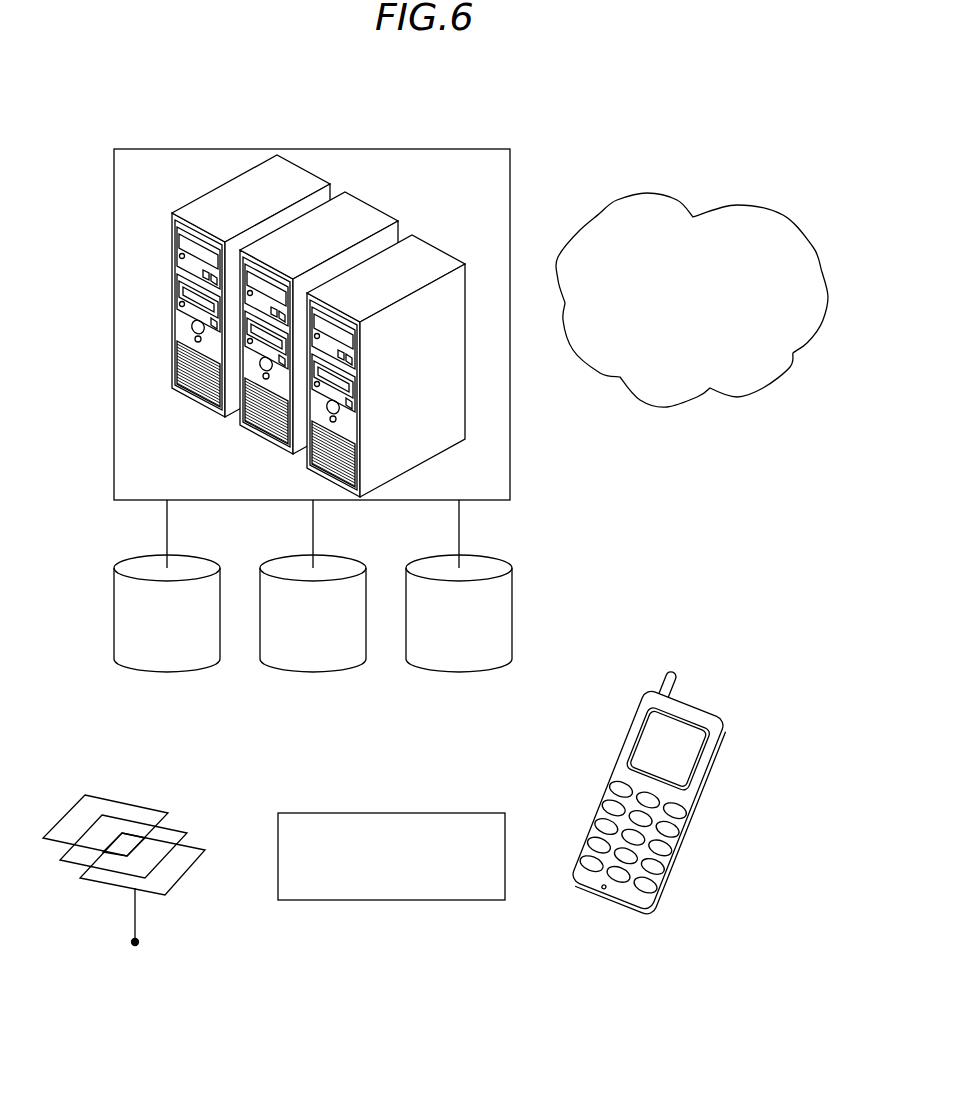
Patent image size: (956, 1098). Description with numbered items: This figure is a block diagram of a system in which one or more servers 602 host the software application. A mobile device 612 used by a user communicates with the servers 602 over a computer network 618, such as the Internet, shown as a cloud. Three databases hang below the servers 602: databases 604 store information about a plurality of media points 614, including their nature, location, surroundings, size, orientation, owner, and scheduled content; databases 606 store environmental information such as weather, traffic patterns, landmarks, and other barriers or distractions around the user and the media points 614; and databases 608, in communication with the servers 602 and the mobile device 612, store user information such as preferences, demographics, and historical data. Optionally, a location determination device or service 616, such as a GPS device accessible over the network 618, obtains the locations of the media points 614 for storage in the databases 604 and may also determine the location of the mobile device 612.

The servers 602 is at (473, 149).
The databases 604 is at (167, 673).
The databases 606 is at (313, 673).
The databases 608 is at (459, 673).
The mobile device 612 is at (703, 715).
The media points 614 is at (140, 818).
The location determination device or service 616 is at (467, 812).
The network 618 is at (747, 222).